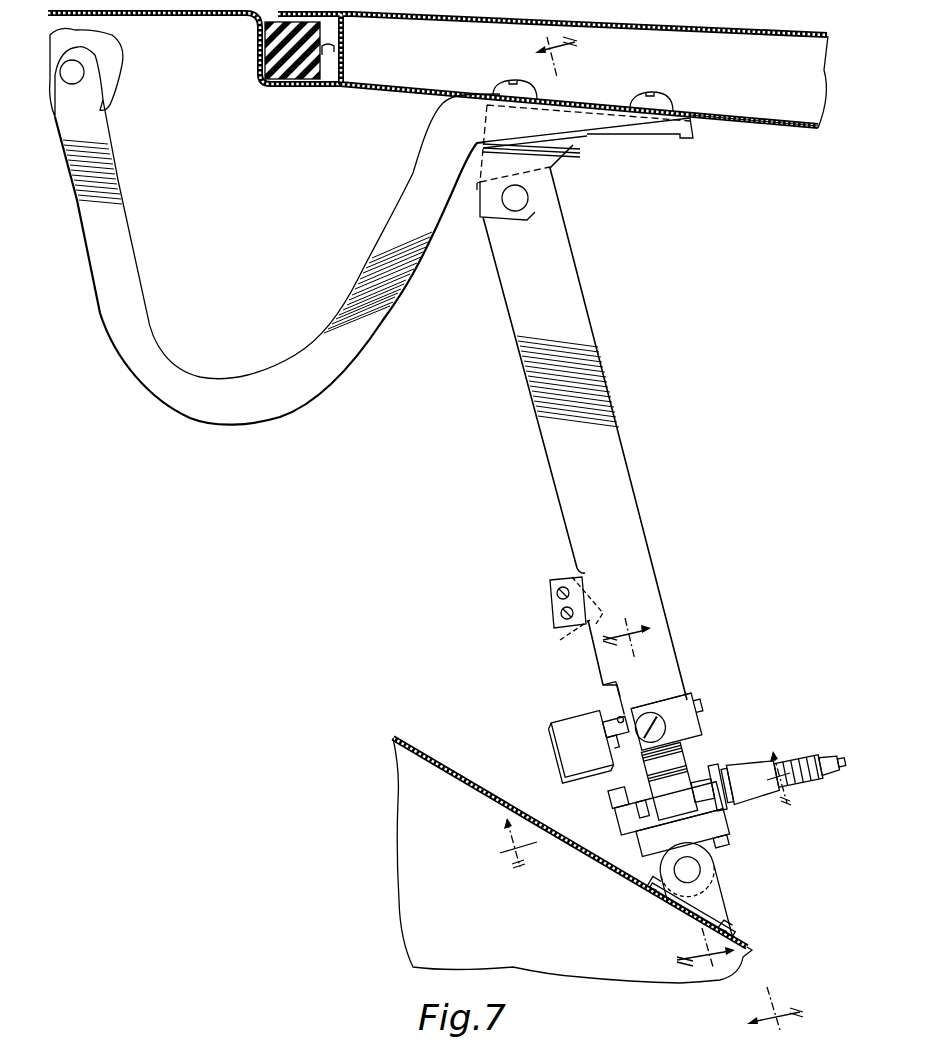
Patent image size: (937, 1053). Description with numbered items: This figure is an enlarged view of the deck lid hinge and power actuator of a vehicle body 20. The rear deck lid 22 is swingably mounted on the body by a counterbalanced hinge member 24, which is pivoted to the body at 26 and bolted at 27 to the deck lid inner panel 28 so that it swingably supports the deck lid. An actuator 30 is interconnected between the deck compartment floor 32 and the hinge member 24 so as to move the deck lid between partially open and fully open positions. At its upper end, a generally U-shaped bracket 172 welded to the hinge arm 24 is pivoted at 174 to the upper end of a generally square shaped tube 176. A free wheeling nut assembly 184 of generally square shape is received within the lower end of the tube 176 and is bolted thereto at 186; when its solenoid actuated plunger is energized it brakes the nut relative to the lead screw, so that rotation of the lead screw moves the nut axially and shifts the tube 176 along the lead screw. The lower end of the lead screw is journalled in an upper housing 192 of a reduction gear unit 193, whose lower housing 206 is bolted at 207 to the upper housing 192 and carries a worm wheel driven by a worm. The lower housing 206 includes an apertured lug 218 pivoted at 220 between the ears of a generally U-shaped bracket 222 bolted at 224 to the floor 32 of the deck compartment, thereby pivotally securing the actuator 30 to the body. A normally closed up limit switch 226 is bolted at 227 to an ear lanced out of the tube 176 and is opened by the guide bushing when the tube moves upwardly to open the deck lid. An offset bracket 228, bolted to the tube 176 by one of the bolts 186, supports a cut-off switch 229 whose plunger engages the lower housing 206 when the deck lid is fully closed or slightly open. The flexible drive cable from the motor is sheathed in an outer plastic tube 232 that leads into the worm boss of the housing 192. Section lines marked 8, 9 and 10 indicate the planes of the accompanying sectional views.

The vehicle body 20 is at (238, 19).
The rear deck lid 22 is at (414, 24).
The hinge member 24 is at (175, 407).
The pivot 26 is at (84, 74).
The bolts 27 is at (632, 98).
The deck lid inner panel 28 is at (738, 127).
The actuator 30 is at (637, 469).
The deck compartment floor 32 is at (473, 771).
The U-shaped bracket 172 is at (558, 157).
The pivot 174 is at (514, 204).
The tube 176 is at (589, 314).
The nut assembly 184 is at (619, 711).
The bolts 186 is at (645, 712).
The upper housing 192 is at (698, 770).
The reduction gear unit 193 is at (603, 798).
The lower housing 206 is at (669, 781).
The bolts 207 is at (728, 831).
The apertured lug 218 is at (708, 838).
The pivot 220 is at (689, 871).
The U-shaped bracket 222 is at (708, 894).
The bolts 224 is at (712, 930).
The up limit switch 226 is at (588, 624).
The bolts 227 is at (561, 613).
The offset bracket 228 is at (674, 691).
The cut-off switch 229 is at (640, 827).
The outer plastic tube 232 is at (818, 760).
The section line 8- 8 is at (654, 533).
The section line 9- 9 is at (669, 789).
The section line 10- 10 is at (635, 799).